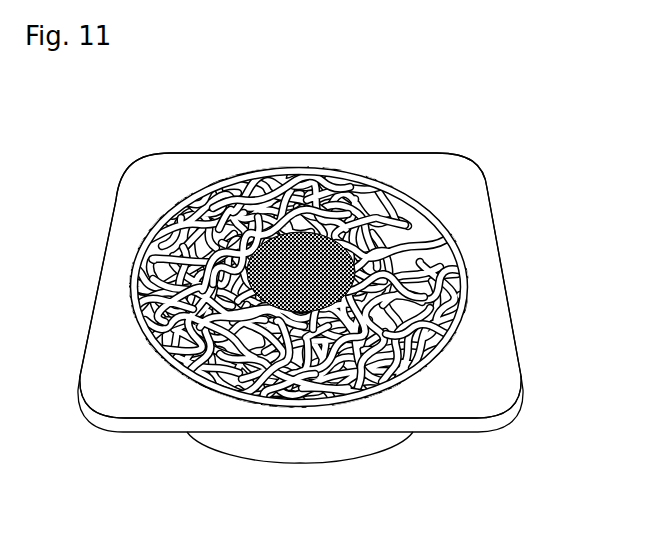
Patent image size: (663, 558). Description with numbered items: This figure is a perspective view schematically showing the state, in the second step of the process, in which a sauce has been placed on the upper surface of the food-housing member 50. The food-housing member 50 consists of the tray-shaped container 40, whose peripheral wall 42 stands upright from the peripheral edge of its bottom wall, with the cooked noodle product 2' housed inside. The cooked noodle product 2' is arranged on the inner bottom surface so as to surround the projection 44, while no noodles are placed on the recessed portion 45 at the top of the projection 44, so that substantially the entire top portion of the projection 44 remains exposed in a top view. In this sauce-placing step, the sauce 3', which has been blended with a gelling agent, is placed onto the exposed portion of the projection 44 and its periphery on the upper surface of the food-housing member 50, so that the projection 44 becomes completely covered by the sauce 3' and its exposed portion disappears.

The food-housing member 50 is at (516, 150).
The container 40 is at (497, 366).
The peripheral wall 42 is at (309, 450).
The cooked noodle product 2' is at (317, 295).
The sauce 3' is at (311, 233).
The recessed portion 45 is at (283, 262).
The projection 44 is at (301, 272).